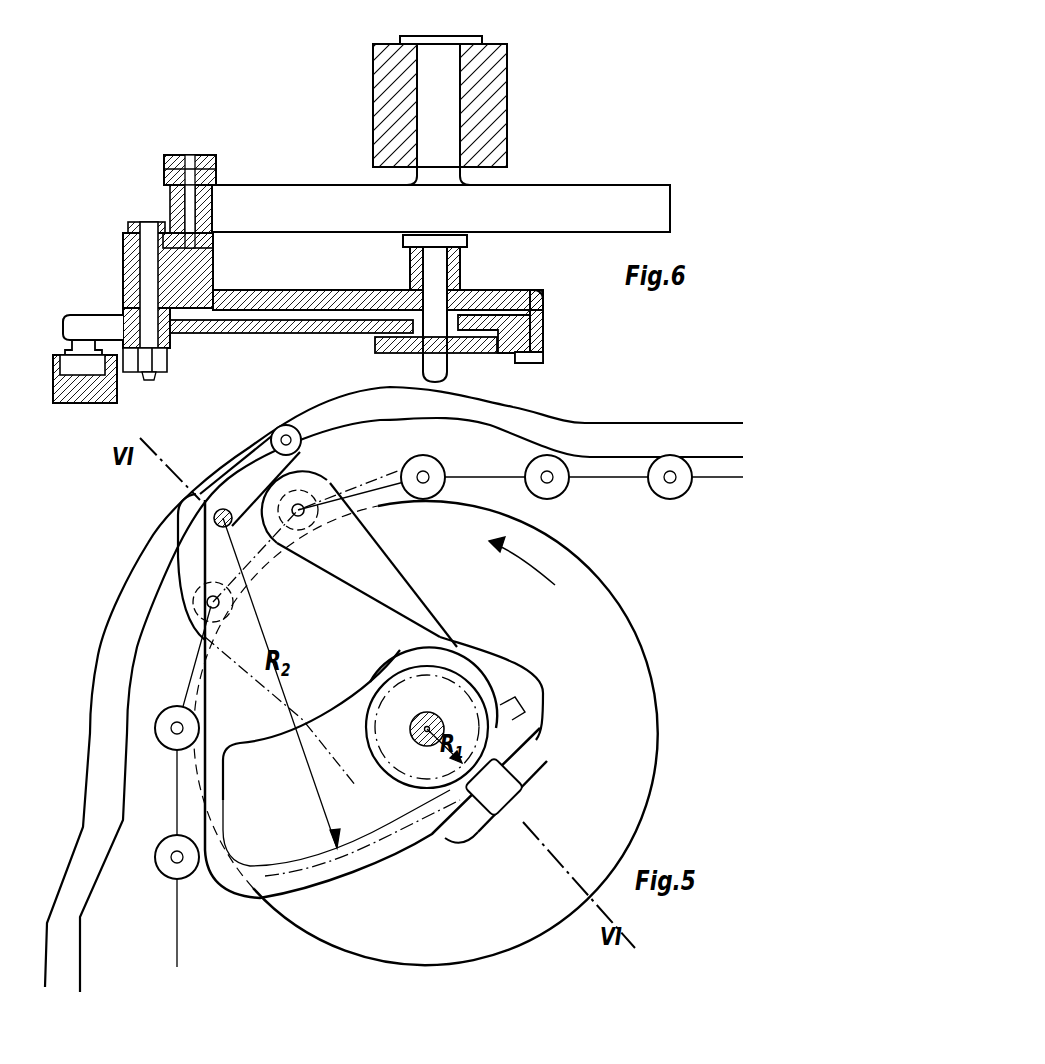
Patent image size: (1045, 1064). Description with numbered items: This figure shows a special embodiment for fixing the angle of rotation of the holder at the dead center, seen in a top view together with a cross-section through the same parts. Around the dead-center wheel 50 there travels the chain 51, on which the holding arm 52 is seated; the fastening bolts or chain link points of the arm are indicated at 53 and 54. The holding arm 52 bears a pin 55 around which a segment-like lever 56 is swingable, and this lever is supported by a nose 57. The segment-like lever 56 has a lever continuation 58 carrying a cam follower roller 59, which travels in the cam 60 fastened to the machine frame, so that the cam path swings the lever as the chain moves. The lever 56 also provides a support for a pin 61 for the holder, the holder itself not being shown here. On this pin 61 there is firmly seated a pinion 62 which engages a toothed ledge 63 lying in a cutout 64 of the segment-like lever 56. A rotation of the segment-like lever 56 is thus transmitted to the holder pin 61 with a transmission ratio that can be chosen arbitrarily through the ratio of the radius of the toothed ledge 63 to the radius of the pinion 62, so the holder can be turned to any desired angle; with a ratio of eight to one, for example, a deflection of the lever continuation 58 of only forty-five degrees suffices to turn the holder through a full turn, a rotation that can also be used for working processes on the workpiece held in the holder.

In FIG. 6, the dead-center wheel 50 is at (311, 197).
In FIG. 5, the dead-center wheel 50 is at (603, 820).
In FIG. 6, the chain 51 is at (216, 172).
In FIG. 5, the chain 51 is at (685, 480).
In FIG. 6, the holding arm 52 is at (262, 333).
In FIG. 5, the holding arm 52 is at (240, 675).
In FIG. 6, the fastening bolt or chain link point 53 is at (192, 190).
In FIG. 5, the fastening bolt or chain link point 53 is at (207, 600).
In FIG. 5, the fastening bolt or chain link point 54 is at (304, 505).
In FIG. 6, the pin 55 is at (142, 255).
In FIG. 5, the pin 55 is at (223, 508).
In FIG. 6, the segment-like lever 56 is at (302, 300).
In FIG. 5, the segment-like lever 56 is at (530, 672).
In FIG. 6, the nose 57 is at (532, 364).
In FIG. 5, the nose 57 is at (520, 773).
In FIG. 6, the lever continuation 58 is at (74, 322).
In FIG. 5, the lever continuation 58 is at (257, 455).
In FIG. 6, the cam follower roller 59 is at (95, 364).
In FIG. 5, the cam follower roller 59 is at (288, 425).
In FIG. 6, the cam 60 is at (73, 400).
In FIG. 5, the cam 60 is at (330, 415).
In FIG. 6, the pin for the holder 61 is at (440, 282).
In FIG. 5, the pin for the holder 61 is at (445, 729).
In FIG. 6, the pinion 62 is at (460, 357).
In FIG. 5, the pinion 62 is at (475, 722).
In FIG. 6, the toothed ledge 63 is at (500, 336).
In FIG. 5, the toothed ledge 63 is at (393, 833).
In FIG. 5, the cutout 64 is at (312, 840).